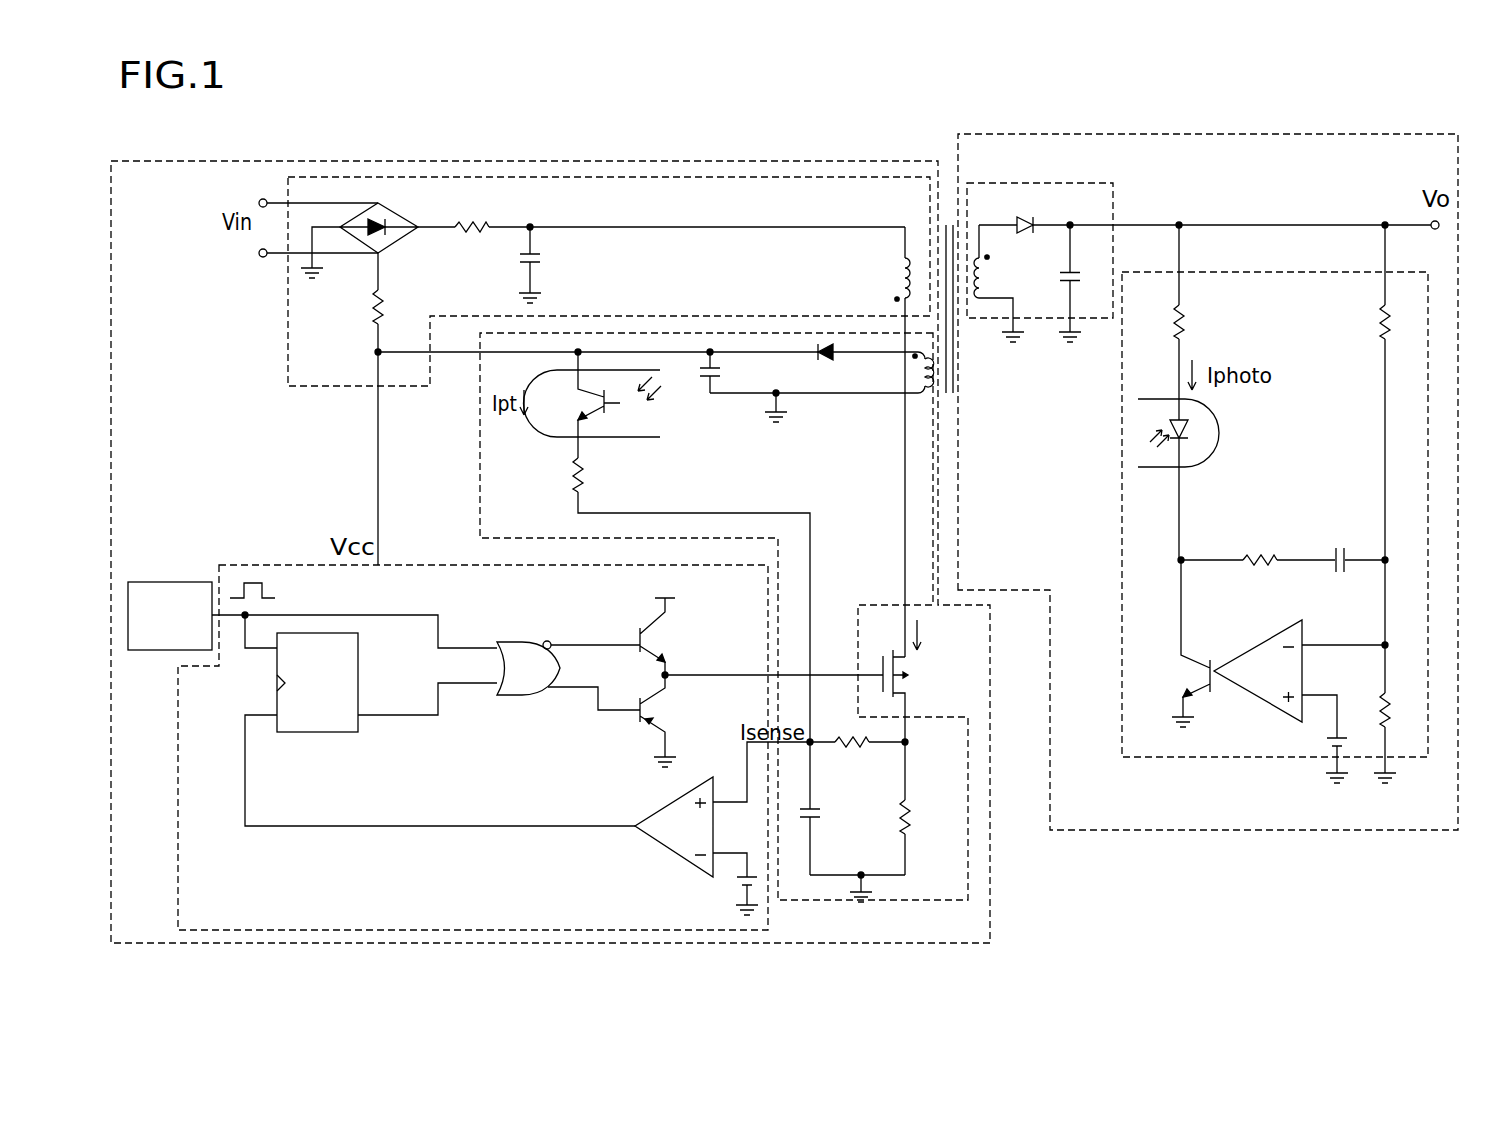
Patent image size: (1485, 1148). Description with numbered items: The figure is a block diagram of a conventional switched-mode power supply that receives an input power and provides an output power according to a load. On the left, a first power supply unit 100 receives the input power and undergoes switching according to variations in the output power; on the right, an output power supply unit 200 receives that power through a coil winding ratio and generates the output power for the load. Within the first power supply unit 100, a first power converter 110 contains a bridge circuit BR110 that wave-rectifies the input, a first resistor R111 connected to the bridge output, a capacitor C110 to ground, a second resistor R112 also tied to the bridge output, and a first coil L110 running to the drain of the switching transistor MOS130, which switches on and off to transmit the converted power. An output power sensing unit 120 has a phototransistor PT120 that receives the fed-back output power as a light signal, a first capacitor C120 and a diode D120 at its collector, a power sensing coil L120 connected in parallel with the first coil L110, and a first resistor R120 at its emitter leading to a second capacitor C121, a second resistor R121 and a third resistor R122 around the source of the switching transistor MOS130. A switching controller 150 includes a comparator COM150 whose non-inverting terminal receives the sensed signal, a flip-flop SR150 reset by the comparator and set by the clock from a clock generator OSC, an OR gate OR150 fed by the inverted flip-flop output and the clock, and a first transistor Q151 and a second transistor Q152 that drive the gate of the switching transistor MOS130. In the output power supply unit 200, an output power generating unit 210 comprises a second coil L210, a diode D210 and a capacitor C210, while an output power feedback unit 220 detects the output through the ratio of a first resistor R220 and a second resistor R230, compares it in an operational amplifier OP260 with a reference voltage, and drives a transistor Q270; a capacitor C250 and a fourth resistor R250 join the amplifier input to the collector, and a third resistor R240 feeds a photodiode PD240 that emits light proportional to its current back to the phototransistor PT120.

The first power supply unit 100 is at (498, 160).
The first power converter 110 is at (288, 362).
The output power sensing unit 120 is at (480, 440).
The switching controller 150 is at (427, 564).
The output power supply unit 200 is at (1170, 838).
The output power generating unit 210 is at (1042, 183).
The output power feedback unit 220 is at (1181, 760).
The bridge circuit BR110 is at (404, 216).
The first resistor R111 is at (661, 242).
The capacitor C110 is at (562, 263).
The second resistor R112 is at (354, 302).
The first coil L110 is at (879, 442).
The phototransistor PT120 is at (593, 405).
The first resistor R120 is at (691, 600).
The first capacitor C120 is at (735, 372).
The diode D120 is at (828, 366).
The power sensing coil L120 is at (920, 401).
The switching transistor MOS130 is at (827, 681).
The second resistor R121 is at (869, 756).
The third resistor R122 is at (931, 808).
The second capacitor C121 is at (829, 808).
The clock generator OSC is at (170, 582).
The flip-flop SR150 is at (318, 733).
The OR gate OR150 is at (505, 640).
The first transistor Q151 is at (675, 622).
The second transistor Q152 is at (675, 721).
The comparator COM150 is at (673, 855).
The second coil L210 is at (1004, 283).
The diode D210 is at (1032, 211).
The capacitor C210 is at (1055, 282).
The third resistor R240 is at (1203, 312).
The photodiode PD240 is at (1211, 479).
The first resistor R220 is at (1362, 459).
The fourth resistor R250 is at (1258, 547).
The capacitor C250 is at (1351, 547).
The transistor Q270 is at (1176, 643).
The operational amplifier OP260 is at (1263, 646).
The second resistor R230 is at (1370, 738).